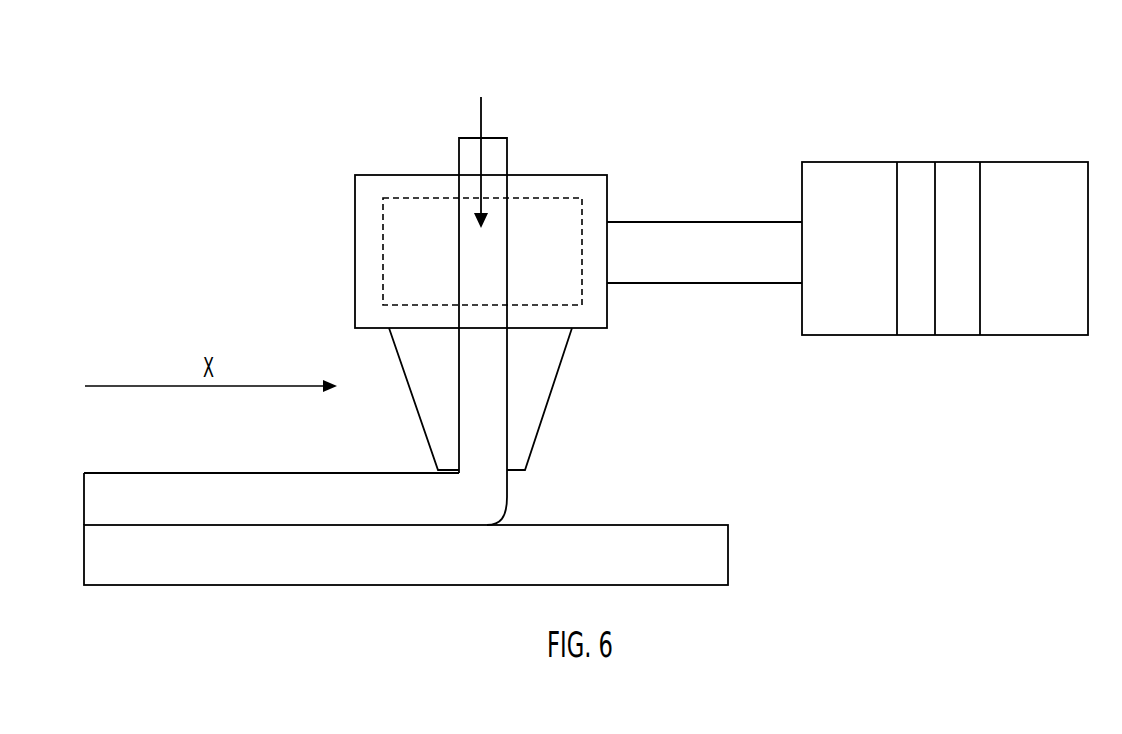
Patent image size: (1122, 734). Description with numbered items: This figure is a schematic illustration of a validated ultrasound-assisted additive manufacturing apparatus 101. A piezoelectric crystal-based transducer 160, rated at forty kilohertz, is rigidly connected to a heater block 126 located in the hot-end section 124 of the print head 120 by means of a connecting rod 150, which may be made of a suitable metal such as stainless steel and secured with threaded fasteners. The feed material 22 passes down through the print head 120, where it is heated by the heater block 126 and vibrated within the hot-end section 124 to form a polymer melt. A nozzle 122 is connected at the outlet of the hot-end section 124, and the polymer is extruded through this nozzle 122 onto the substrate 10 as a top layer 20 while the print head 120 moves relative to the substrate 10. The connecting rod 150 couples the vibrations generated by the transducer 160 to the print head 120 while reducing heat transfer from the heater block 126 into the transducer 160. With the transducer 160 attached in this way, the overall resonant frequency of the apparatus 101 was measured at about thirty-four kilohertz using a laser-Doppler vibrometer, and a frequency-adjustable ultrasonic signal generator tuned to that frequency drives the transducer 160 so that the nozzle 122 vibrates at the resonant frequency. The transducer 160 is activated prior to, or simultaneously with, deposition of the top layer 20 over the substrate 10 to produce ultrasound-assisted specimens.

The validated additive manufacturing apparatus 101 is at (755, 72).
The print head 120 is at (322, 325).
The hot-end section 124 is at (355, 212).
The heater block 126 is at (553, 198).
The feed material 22 is at (459, 152).
The nozzle 122 is at (557, 372).
The connecting rod 150 is at (738, 284).
The transducer 160 is at (1025, 338).
The top layer 20 is at (508, 497).
The substrate 10 is at (730, 555).